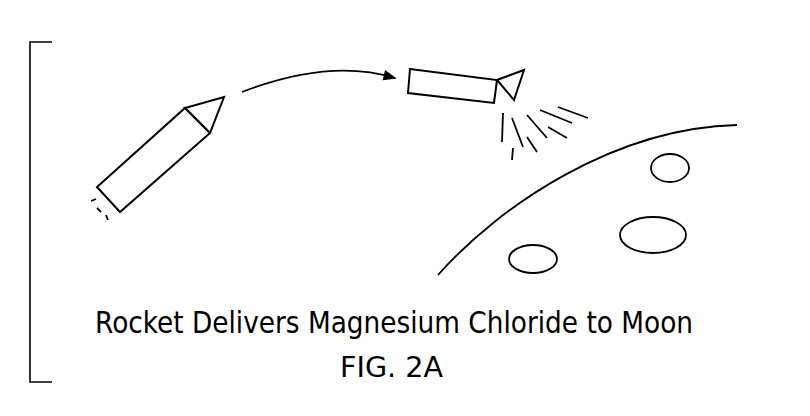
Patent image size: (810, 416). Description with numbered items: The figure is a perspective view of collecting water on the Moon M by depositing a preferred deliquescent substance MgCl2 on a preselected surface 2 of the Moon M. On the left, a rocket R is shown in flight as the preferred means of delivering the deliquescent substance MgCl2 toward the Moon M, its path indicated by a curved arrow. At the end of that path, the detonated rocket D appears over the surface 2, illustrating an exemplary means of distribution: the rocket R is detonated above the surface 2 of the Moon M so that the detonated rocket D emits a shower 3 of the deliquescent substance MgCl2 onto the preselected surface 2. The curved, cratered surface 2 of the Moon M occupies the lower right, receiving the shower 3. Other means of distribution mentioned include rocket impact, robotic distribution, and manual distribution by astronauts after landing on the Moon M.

The rocket R is at (170, 123).
The detonated rocket D is at (480, 78).
The shower 3 is at (555, 119).
The deliquescent substance MgCl2 is at (633, 102).
The preselected surface 2 is at (592, 226).
The Moon M is at (735, 214).